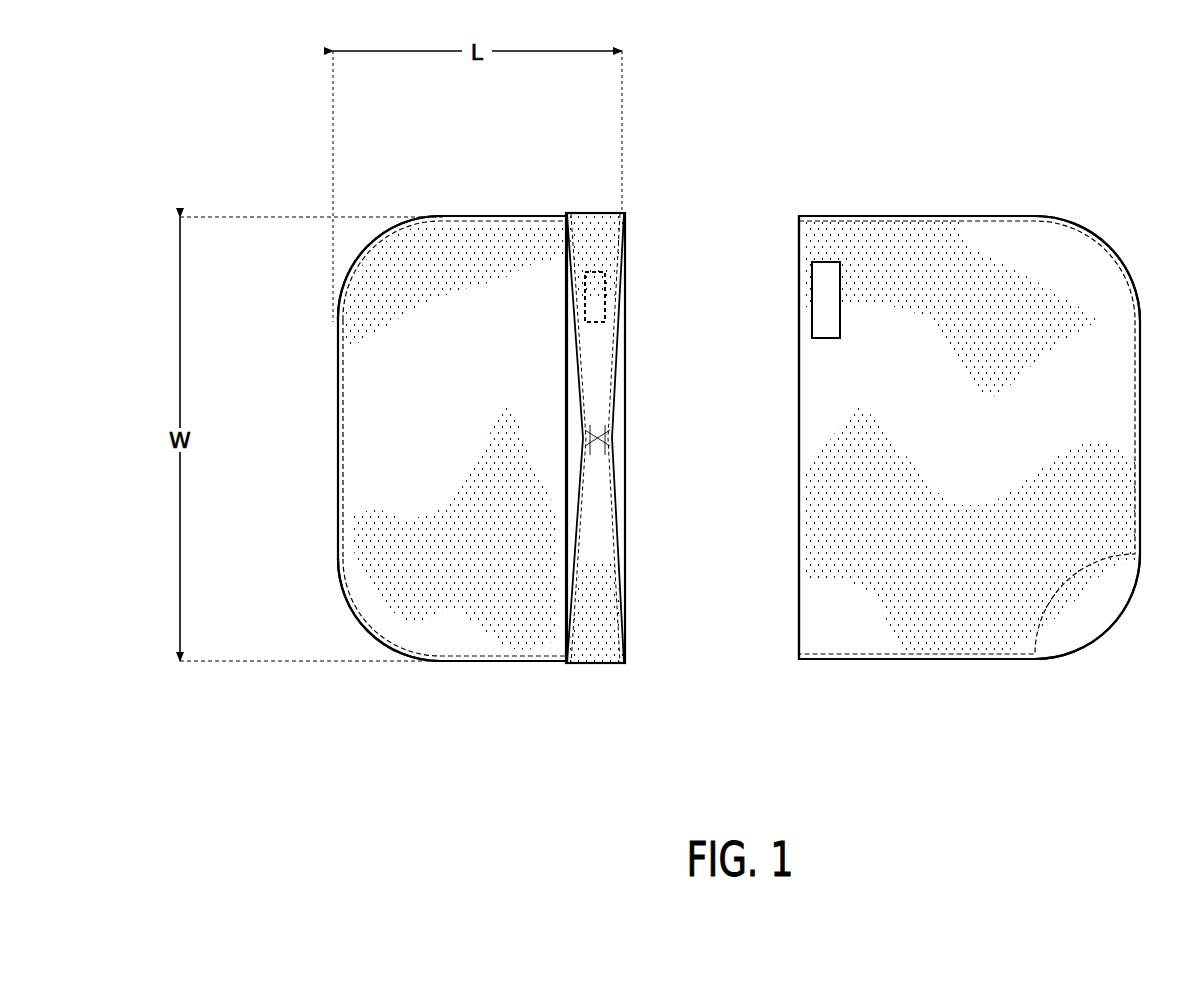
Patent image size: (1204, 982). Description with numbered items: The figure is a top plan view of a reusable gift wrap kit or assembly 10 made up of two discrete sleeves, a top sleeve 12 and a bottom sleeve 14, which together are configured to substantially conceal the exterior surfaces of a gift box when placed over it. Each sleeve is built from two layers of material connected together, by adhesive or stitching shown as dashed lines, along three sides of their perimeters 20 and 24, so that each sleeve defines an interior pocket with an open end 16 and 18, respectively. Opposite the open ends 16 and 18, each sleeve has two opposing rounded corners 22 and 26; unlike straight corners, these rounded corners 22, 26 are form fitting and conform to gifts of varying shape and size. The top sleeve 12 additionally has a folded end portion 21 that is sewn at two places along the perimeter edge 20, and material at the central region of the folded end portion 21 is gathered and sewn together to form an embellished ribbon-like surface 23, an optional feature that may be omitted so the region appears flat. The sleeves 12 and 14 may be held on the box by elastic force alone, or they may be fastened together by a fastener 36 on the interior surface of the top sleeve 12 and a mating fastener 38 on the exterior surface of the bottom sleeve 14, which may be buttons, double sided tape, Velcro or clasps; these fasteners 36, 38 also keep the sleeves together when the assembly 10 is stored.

The reusable gift wrap assembly 10 is at (727, 92).
The top sleeve 12 is at (462, 375).
The bottom sleeve 14 is at (953, 400).
The open end 16 is at (625, 245).
The open end 18 is at (799, 598).
The perimeter 20 is at (498, 663).
The folded end portion 21 is at (612, 655).
The rounded corners 22 is at (362, 263).
The ribbon-like surface 23 is at (593, 440).
The perimeter 24 is at (892, 660).
The rounded corners 26 is at (1097, 242).
The fastener 36 is at (585, 298).
The mating fastener 38 is at (822, 262).